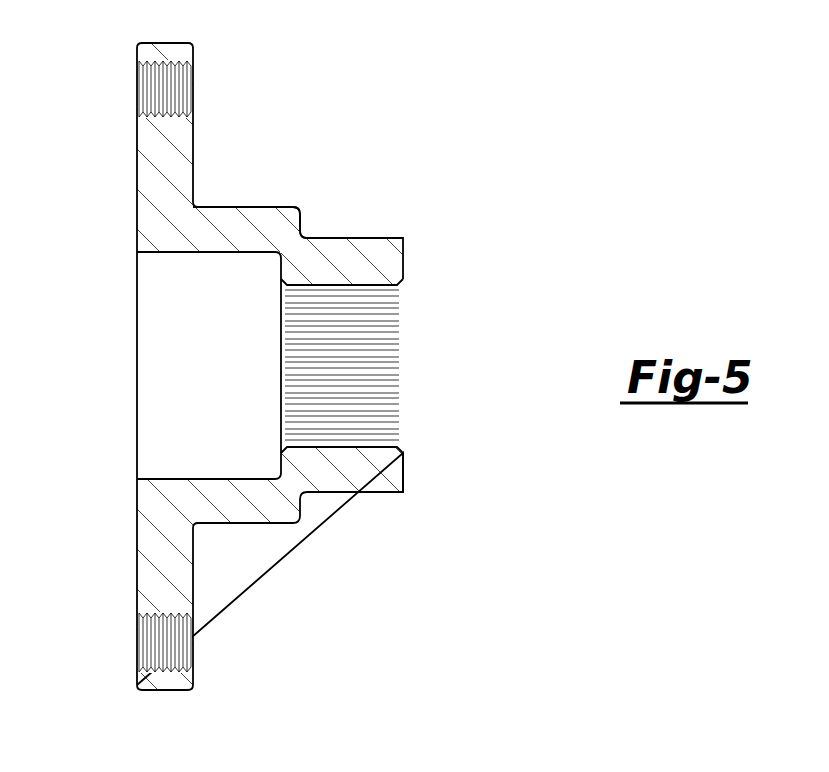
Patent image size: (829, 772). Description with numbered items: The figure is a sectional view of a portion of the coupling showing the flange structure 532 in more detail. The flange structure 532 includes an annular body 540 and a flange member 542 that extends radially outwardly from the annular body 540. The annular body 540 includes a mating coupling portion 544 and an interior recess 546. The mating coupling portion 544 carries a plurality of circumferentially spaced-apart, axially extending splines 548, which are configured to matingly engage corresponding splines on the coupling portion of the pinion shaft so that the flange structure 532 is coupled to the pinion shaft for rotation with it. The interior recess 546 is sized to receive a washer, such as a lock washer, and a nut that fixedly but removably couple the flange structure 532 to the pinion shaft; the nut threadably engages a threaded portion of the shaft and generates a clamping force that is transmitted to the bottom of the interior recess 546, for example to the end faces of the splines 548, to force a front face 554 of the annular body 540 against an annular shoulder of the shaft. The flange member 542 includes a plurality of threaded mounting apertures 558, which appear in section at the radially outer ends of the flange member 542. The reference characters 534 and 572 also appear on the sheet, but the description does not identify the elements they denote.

The hub 532 is at (128, 716).
The shaft 534 is at (451, 756).
The hub body 540 is at (265, 210).
The flange 542 is at (146, 181).
The splined bore 544 is at (313, 460).
The bore 546 is at (146, 358).
The splines 548 is at (395, 333).
The hub portion 554 is at (403, 470).
The threaded hole 558 is at (193, 92).
The bearing 572 is at (618, 771).